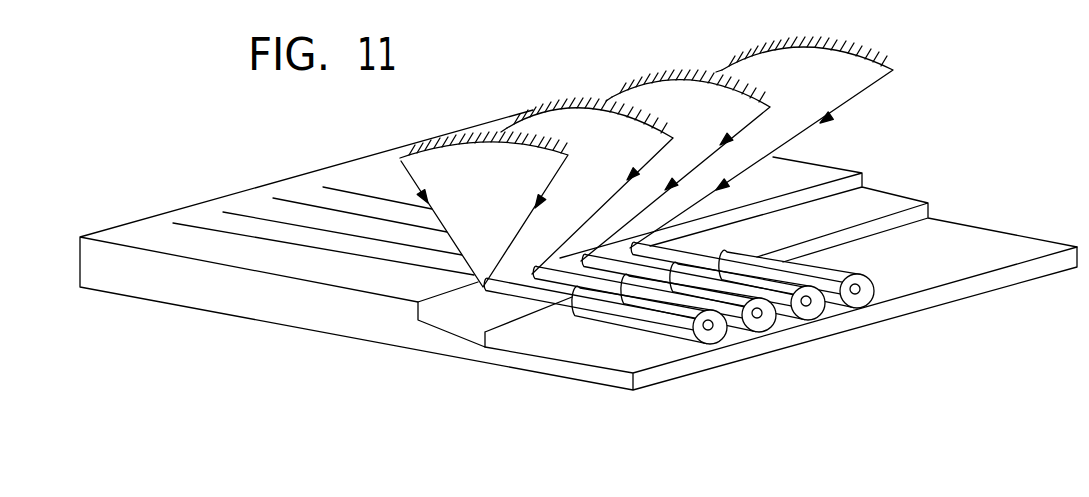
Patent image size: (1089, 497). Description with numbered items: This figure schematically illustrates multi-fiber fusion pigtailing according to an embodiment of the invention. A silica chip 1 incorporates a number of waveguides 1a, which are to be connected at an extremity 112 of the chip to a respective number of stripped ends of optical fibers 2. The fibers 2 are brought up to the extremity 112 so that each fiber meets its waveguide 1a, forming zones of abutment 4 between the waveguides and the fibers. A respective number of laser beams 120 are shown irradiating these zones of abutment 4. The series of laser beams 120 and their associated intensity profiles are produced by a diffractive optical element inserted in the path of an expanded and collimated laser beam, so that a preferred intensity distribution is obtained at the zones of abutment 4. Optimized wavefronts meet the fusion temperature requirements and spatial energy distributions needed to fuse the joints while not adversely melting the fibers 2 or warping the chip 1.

The silica chip 1 is at (193, 316).
The waveguides 1a is at (323, 183).
The optical fibers 2 is at (671, 320).
The zones of abutment 4 is at (518, 280).
The extremity of the chip 112 is at (436, 311).
The laser beams 120 is at (737, 50).